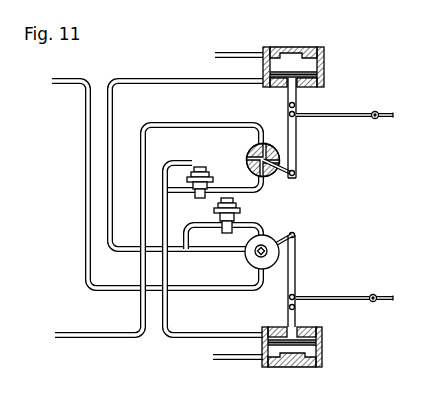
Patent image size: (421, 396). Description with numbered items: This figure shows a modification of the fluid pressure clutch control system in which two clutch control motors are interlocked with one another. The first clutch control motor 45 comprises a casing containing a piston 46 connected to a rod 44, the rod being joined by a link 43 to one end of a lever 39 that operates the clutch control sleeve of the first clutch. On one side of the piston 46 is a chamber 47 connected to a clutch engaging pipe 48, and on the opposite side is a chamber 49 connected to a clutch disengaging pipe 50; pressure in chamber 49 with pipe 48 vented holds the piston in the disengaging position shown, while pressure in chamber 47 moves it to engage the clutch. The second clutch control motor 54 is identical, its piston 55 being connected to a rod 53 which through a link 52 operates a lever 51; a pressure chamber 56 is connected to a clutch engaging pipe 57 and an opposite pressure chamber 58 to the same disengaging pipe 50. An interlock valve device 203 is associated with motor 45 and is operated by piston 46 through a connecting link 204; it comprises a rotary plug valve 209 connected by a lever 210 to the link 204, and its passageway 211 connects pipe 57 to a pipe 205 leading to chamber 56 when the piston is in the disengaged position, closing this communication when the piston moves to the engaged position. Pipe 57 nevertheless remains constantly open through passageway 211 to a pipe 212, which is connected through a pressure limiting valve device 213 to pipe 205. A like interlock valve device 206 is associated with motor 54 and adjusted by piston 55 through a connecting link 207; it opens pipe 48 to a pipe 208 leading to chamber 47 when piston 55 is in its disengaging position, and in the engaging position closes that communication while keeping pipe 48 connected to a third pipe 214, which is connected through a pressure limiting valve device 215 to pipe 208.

The lever 39 is at (362, 113).
The link 43 is at (290, 115).
The rod 44 is at (290, 99).
The clutch control motor 45 is at (321, 62).
The piston 46 is at (326, 52).
The chamber 47 is at (323, 87).
The clutch engaging pipe 48 is at (58, 84).
The chamber 49 is at (310, 56).
The clutch disengaging pipe 50 is at (238, 54).
The lever 51 is at (362, 296).
The link 52 is at (289, 298).
The rod 53 is at (289, 312).
The clutch control motor 54 is at (329, 355).
The piston 55 is at (322, 343).
The pressure chamber 56 is at (322, 331).
The clutch engaging pipe 57 is at (82, 323).
The pressure chamber 58 is at (310, 359).
The interlock valve device 203 is at (293, 179).
The connecting link 204 is at (297, 135).
The pipe 205 is at (218, 331).
The interlock valve device 206 is at (280, 253).
The connecting link 207 is at (297, 277).
The pipe 208 is at (168, 72).
The rotary plug valve 209 is at (255, 149).
The lever 210 is at (296, 173).
The passageway 211 is at (281, 155).
The pipe 212 is at (263, 193).
The pressure limiting valve device 213 is at (200, 167).
The pipe 214 is at (250, 225).
The pressure limiting valve device 215 is at (218, 207).